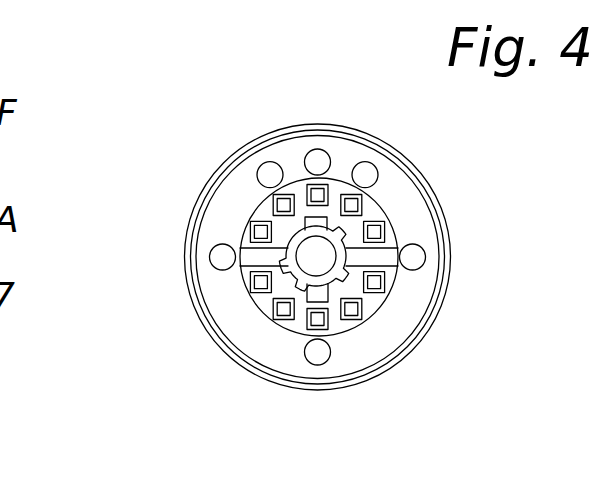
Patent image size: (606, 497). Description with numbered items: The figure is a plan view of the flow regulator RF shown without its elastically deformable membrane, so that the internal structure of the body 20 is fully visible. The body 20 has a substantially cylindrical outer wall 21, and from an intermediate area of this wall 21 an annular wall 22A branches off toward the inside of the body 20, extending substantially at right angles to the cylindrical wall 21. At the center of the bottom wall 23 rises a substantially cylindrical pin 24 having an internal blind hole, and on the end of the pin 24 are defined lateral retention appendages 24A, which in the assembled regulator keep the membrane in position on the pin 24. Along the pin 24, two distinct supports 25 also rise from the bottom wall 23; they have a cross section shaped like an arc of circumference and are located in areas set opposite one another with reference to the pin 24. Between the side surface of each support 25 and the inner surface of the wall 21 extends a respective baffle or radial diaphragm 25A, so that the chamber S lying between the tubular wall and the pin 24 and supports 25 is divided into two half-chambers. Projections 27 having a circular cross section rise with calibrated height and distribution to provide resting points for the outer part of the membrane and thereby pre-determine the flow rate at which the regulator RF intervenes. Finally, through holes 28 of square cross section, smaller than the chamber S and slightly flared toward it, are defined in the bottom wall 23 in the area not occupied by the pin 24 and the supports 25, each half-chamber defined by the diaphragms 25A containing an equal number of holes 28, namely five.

The body 20 is at (456, 208).
The cylindrical outer wall 21 is at (201, 207).
The annular wall 22A is at (238, 317).
The bottom wall 23 is at (337, 187).
The pin 24 is at (306, 232).
The lateral retention appendages 24A is at (346, 230).
The supports 25 is at (287, 233).
The radial diaphragm 25A is at (248, 257).
The projections 27 is at (267, 170).
The through holes 28 is at (348, 314).
The chamber S is at (295, 325).
The flow regulator RF is at (458, 170).